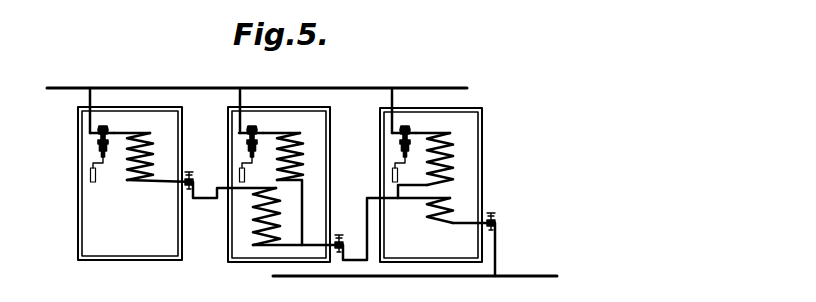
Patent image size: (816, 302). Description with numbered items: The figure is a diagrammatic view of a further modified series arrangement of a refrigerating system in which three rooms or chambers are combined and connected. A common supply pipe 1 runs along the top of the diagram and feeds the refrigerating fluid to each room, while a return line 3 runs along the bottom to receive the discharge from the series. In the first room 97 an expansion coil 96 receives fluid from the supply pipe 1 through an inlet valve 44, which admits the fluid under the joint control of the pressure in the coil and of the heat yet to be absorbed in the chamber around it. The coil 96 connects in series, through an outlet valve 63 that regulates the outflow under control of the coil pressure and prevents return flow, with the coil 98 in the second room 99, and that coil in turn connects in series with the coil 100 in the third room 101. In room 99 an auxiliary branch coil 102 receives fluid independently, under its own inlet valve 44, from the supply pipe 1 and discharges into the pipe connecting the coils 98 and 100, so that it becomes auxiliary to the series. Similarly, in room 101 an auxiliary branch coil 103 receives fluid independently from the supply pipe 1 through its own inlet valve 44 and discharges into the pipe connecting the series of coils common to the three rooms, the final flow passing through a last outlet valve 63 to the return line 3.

The supply pipe 1 is at (160, 87).
The return main pipe 3 is at (377, 278).
The inlet valve 44 is at (98, 133).
The outlet valve 63 is at (206, 163).
The expansion coil 96 is at (150, 138).
The room 97 is at (96, 216).
The coil 98 is at (262, 226).
The room 99 is at (322, 173).
The coil 100 is at (448, 206).
The room 101 is at (470, 158).
The auxiliary branch coil 102 is at (297, 178).
The auxiliary branch coil 103 is at (448, 139).